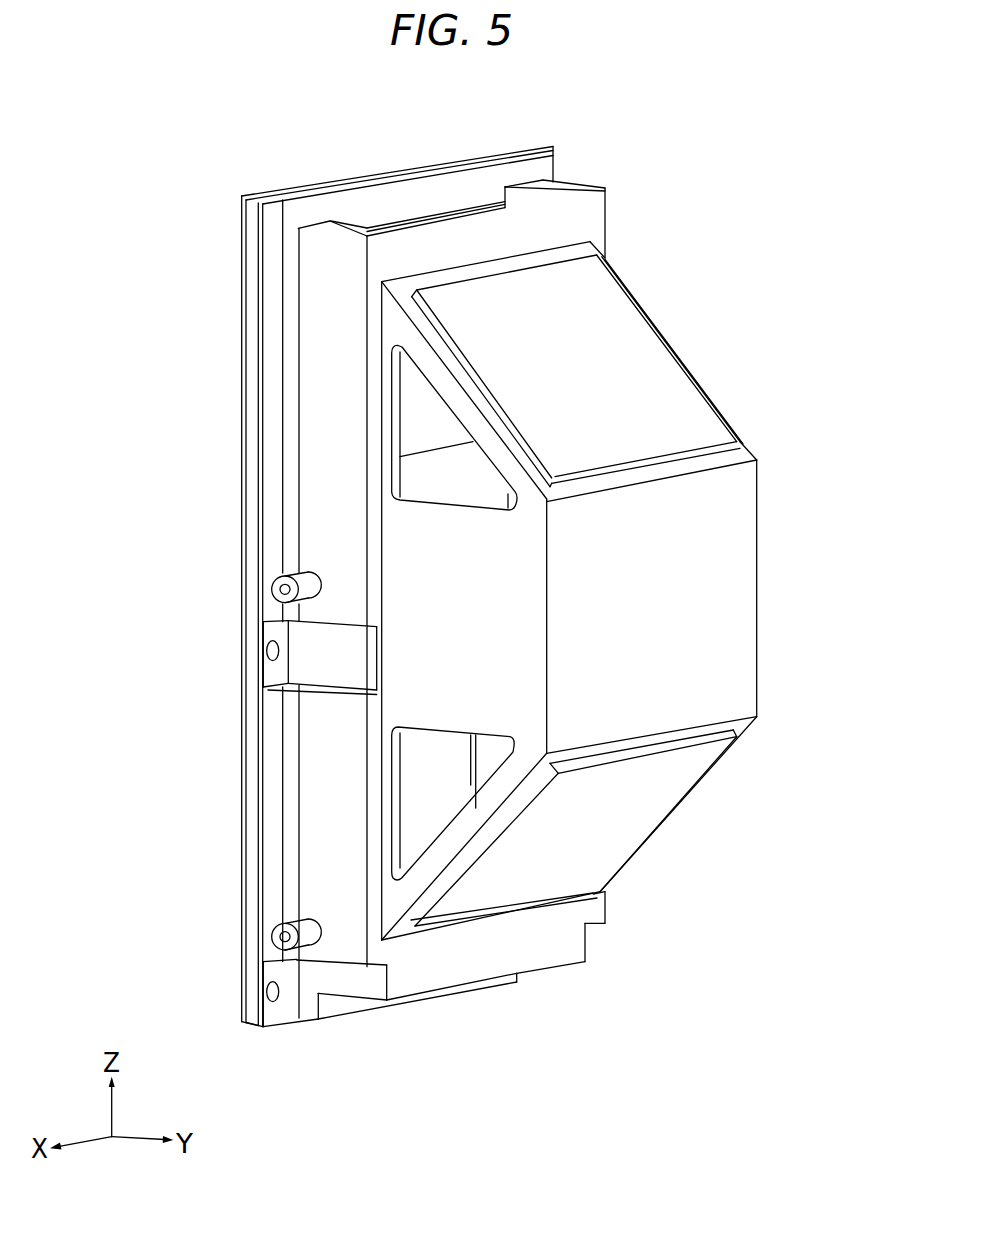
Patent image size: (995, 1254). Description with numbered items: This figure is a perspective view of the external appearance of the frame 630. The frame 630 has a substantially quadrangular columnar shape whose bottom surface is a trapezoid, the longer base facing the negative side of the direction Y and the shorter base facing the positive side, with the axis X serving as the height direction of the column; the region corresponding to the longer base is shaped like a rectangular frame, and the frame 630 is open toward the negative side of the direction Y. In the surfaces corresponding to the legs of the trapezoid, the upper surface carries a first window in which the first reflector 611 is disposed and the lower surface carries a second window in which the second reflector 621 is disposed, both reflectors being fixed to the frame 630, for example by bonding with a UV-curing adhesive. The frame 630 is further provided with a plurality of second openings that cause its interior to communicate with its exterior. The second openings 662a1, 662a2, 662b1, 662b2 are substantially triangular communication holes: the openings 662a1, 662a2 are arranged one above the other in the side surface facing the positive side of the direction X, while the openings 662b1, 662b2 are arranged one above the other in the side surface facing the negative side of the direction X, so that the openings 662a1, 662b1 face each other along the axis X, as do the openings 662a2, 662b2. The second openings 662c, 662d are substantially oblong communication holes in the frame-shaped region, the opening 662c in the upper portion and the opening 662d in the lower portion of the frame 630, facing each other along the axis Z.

The frame 630 is at (715, 108).
The first reflector 611 is at (635, 360).
The second reflector 621 is at (623, 825).
The second opening 662a1 is at (457, 500).
The second opening 662a2 is at (460, 736).
The second opening 662b1 is at (714, 387).
The second opening 662b2 is at (698, 801).
The second opening 662c is at (448, 208).
The second opening 662d is at (453, 998).